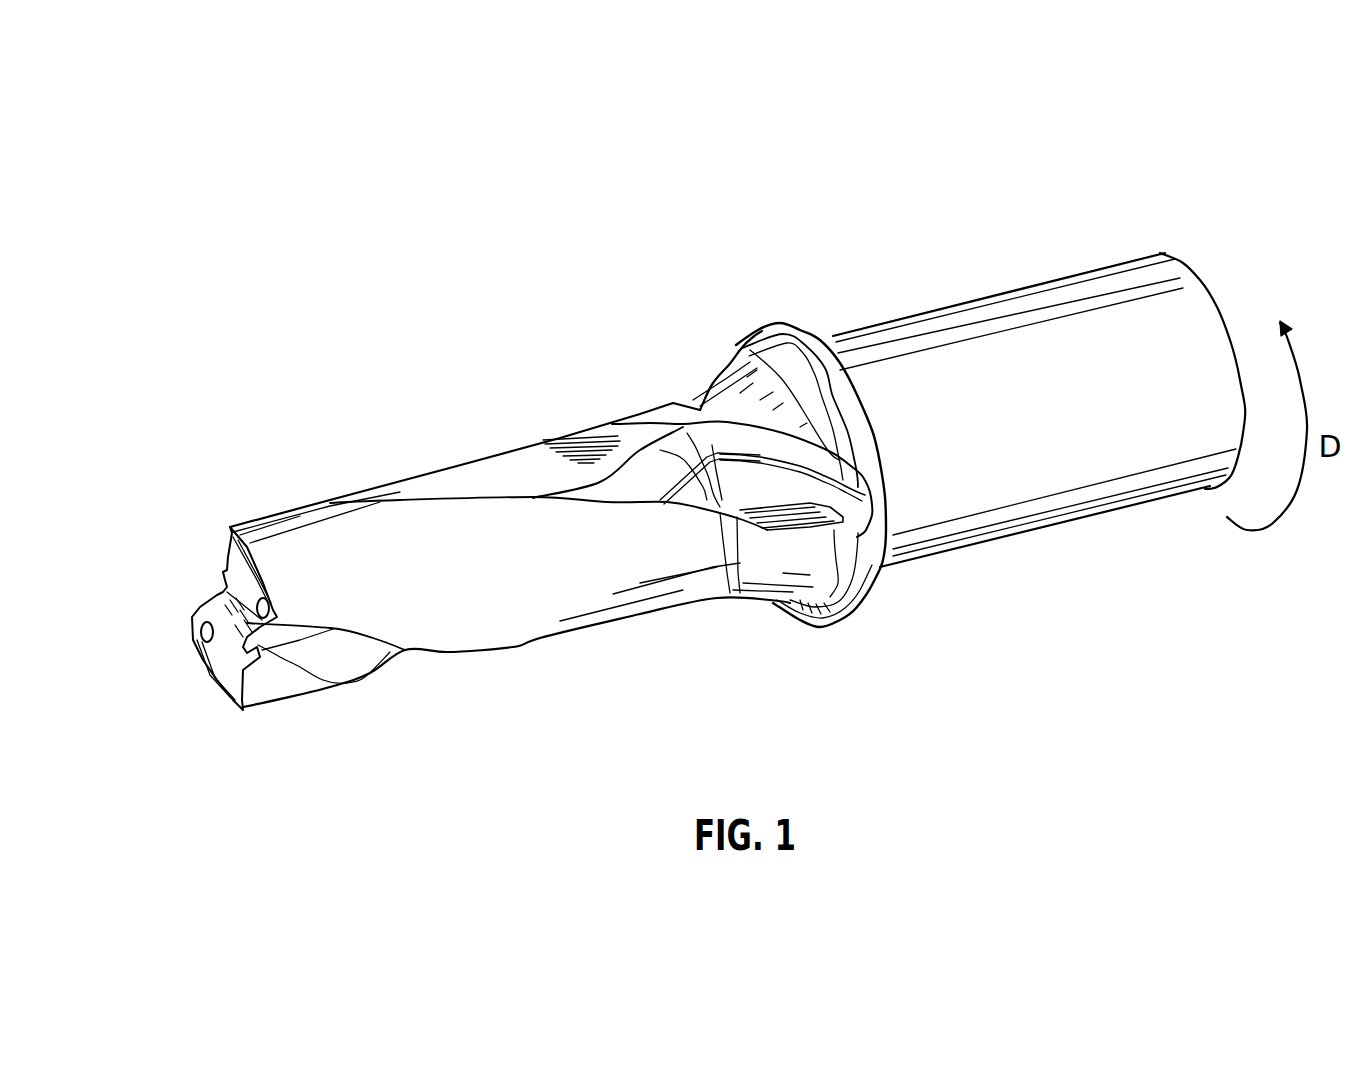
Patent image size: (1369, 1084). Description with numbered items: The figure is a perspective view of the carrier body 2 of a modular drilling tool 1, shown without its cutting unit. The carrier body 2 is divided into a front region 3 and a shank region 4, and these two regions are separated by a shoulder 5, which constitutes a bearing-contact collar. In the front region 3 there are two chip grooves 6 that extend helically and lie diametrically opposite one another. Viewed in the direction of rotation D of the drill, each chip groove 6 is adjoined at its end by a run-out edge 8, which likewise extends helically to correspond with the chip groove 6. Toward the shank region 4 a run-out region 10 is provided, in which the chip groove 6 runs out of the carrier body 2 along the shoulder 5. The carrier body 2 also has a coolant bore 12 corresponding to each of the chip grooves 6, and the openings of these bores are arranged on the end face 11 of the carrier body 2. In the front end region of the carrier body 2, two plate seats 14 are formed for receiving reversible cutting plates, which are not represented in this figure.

The modular drilling tool 1 is at (302, 437).
The carrier body 2 is at (1184, 310).
The front region 3 is at (523, 613).
The shank region 4 is at (1055, 470).
The shoulder 5 is at (852, 605).
The chip groove 6 is at (507, 467).
The run-out edge 8 is at (427, 493).
The run-out region 10 is at (716, 385).
The end face 11 is at (223, 652).
The coolant bore 12 is at (227, 592).
The plate seat 14 is at (223, 572).